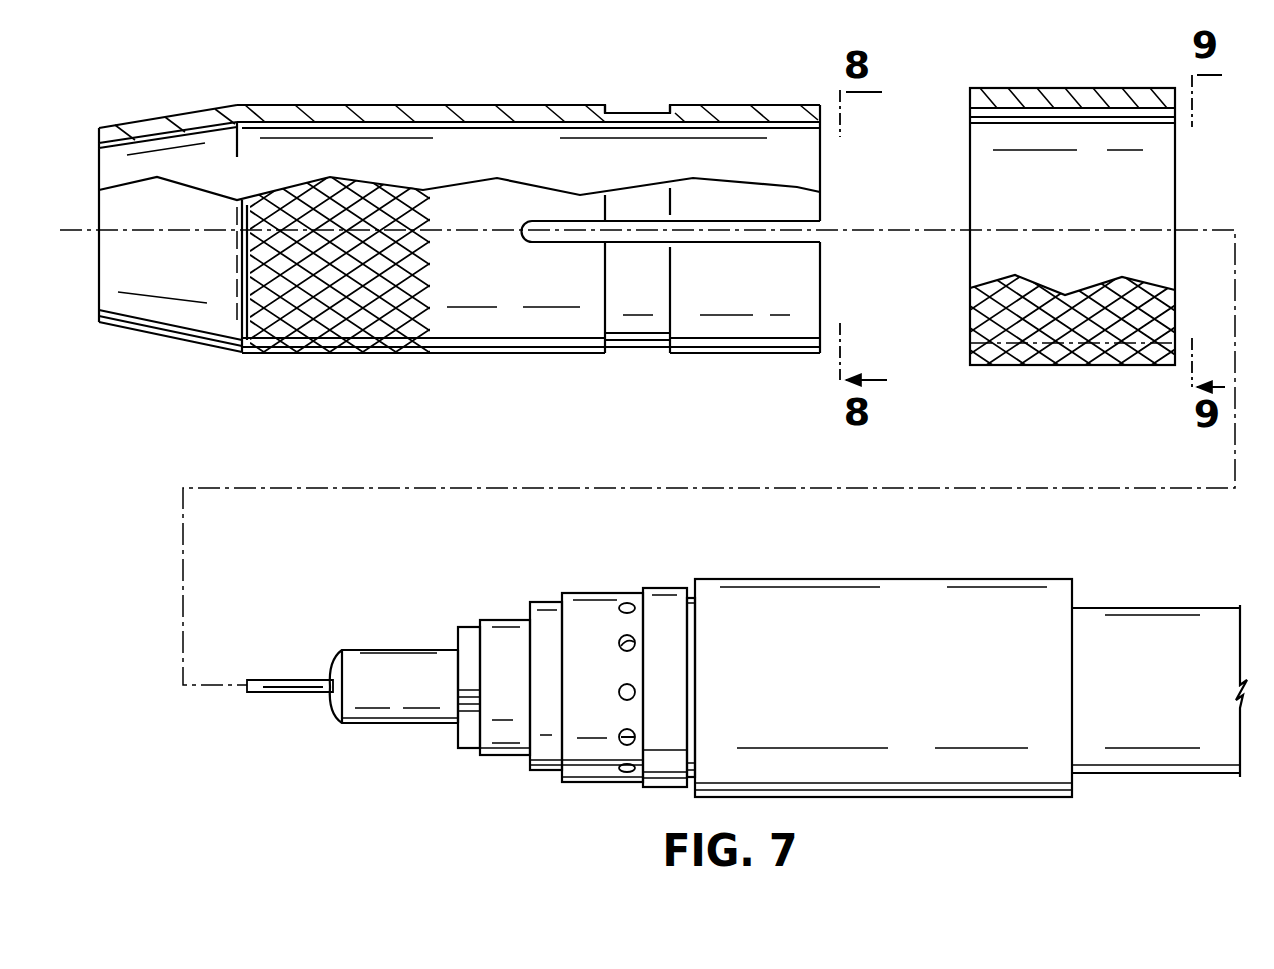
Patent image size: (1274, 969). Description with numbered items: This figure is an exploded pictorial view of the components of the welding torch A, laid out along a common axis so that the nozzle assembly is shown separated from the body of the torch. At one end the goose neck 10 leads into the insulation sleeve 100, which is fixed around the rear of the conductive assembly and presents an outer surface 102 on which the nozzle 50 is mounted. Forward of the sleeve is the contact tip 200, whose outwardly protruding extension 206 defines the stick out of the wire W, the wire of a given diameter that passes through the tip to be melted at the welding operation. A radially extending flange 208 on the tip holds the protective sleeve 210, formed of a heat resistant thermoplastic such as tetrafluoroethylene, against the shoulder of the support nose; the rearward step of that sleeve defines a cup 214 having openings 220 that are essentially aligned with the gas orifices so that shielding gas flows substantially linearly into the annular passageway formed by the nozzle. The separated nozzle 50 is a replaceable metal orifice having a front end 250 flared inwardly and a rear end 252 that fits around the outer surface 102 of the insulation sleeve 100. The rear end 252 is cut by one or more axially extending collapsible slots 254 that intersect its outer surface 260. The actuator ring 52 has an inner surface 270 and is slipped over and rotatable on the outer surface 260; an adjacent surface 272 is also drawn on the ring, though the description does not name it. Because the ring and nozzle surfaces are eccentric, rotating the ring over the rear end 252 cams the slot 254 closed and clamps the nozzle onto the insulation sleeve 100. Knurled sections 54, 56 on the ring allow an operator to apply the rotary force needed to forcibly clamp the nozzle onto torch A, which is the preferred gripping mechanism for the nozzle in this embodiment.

The goose neck 10 is at (1197, 607).
The nozzle 50 is at (498, 241).
The actuator ring 52 is at (1109, 249).
The knurled section 54 is at (345, 315).
The knurled section 56 is at (1083, 322).
The insulation sleeve 100 is at (905, 658).
The outer surface 102 is at (902, 580).
The contact tip 200 is at (740, 665).
The extension 206 is at (377, 648).
The flange 208 is at (472, 630).
The protective sleeve 210 is at (648, 649).
The cup 214 is at (670, 600).
The openings 220 is at (636, 732).
The front end 250 is at (128, 128).
The rear end 252 is at (790, 113).
The collapsible slot 254 is at (788, 238).
The outer surface 260 is at (752, 107).
The inner surface 270 is at (998, 98).
The inner layer 272 is at (1147, 110).
The wire W is at (268, 693).
The torch A is at (265, 830).